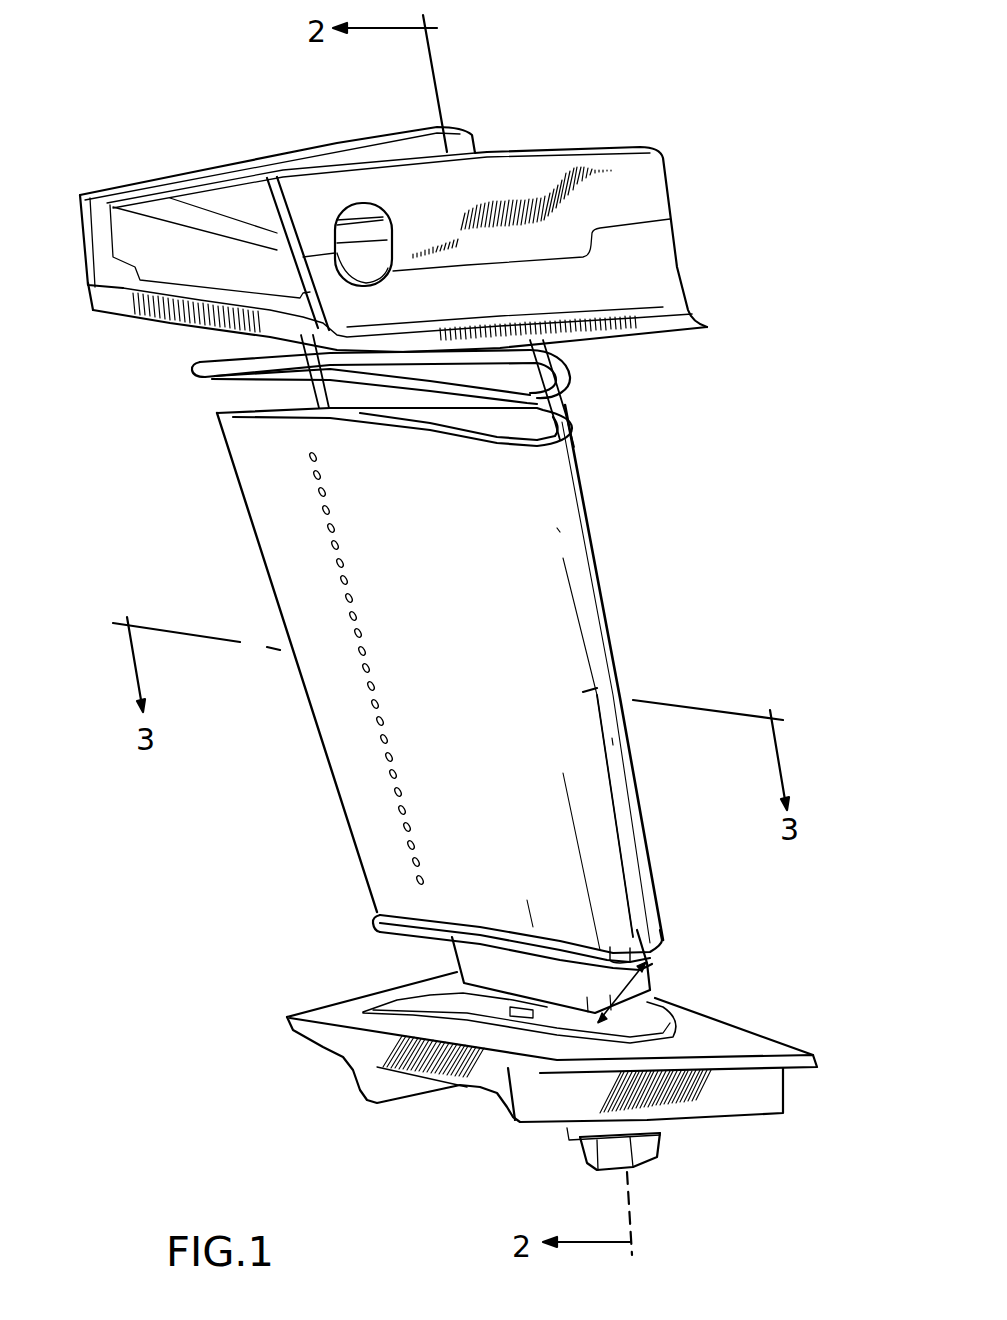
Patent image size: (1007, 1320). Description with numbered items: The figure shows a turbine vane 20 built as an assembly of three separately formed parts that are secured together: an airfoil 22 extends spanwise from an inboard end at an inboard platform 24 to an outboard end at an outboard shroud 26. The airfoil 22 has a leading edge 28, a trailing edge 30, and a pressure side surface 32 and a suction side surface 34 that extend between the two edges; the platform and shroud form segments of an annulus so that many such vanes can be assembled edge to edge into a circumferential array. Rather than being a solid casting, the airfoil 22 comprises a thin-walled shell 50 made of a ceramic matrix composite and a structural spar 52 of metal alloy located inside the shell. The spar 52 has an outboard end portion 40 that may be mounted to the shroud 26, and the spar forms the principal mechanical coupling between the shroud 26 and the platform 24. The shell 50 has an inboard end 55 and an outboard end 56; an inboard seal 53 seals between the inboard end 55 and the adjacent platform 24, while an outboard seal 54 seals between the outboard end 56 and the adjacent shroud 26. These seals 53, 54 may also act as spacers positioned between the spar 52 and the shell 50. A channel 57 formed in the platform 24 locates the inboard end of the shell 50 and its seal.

The vane 20 is at (695, 103).
The airfoil 22 is at (622, 555).
The inboard platform 24 is at (786, 1016).
The outboard shroud 26 is at (692, 217).
The leading edge 28 is at (568, 645).
The trailing edge 30 is at (246, 517).
The pressure side surface 32 is at (413, 710).
The suction side surface 34 is at (604, 590).
The outboard end portion 40 is at (650, 997).
The thin-walled shell 50 is at (540, 527).
The structural spar 52 is at (647, 963).
The inboard seal 53 is at (655, 935).
The outboard seal 54 is at (569, 377).
The inboard end of the shell 55 is at (637, 940).
The outboard end of the shell 56 is at (573, 413).
The channel 57 is at (672, 1012).